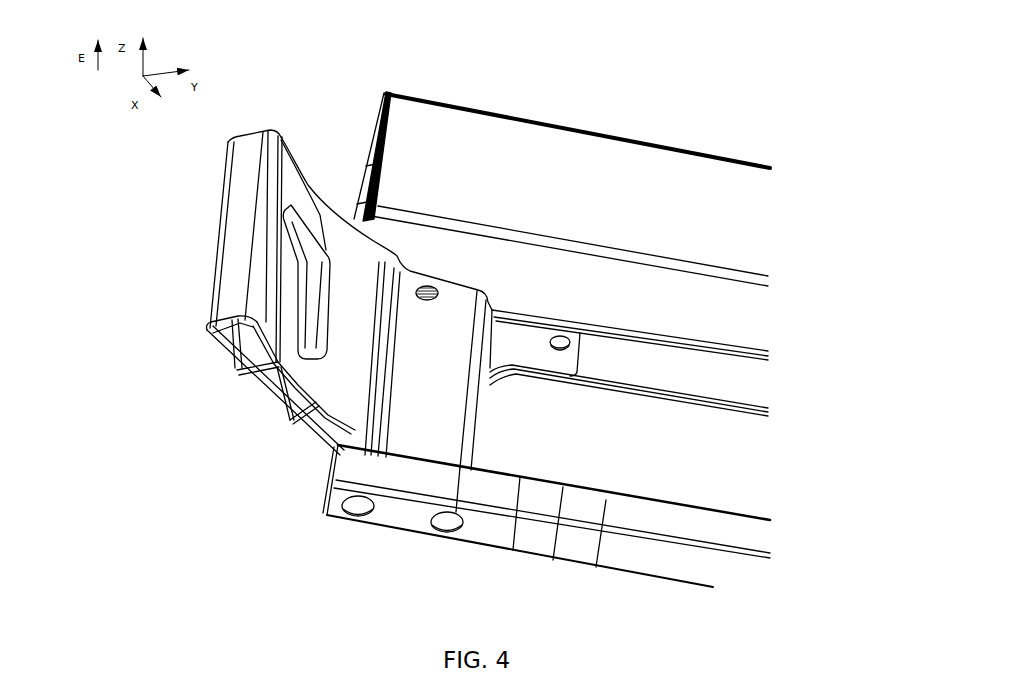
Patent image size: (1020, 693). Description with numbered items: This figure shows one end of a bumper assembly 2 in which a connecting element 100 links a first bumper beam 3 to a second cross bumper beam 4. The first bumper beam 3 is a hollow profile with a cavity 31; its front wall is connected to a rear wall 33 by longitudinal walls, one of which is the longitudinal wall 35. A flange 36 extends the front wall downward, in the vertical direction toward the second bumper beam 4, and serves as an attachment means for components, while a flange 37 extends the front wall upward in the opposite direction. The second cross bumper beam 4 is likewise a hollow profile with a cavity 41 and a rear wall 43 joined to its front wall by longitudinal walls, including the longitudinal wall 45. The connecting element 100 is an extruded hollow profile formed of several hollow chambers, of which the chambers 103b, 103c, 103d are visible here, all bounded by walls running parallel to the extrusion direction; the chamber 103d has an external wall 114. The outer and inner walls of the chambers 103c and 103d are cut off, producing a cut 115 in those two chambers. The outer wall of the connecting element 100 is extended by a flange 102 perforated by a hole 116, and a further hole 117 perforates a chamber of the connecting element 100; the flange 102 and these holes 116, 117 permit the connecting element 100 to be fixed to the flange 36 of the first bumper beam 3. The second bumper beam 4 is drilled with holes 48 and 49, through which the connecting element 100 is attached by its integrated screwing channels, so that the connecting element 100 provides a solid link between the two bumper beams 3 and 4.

The vehicle body structure 2 is at (772, 113).
The first bumper beam 3 is at (756, 208).
The second cross bumper beam 4 is at (752, 535).
The cavity 31 is at (368, 182).
The rear wall 33 is at (562, 165).
The longitudinal wall 35 is at (745, 312).
The flange 36 is at (743, 389).
The flange 37 is at (367, 138).
The cavity 41 is at (326, 486).
The rear wall 43 is at (640, 522).
The longitudinal wall 45 is at (610, 562).
The hole 48 is at (447, 530).
The hole 49 is at (350, 510).
The connecting element 100 is at (210, 175).
The flange 102 is at (527, 345).
The hollow chamber 103b is at (327, 418).
The hollow chamber 103c is at (265, 391).
The hollow chamber 103d is at (304, 413).
The external wall 114 is at (237, 256).
The cut 115 is at (294, 289).
The hole 116 is at (570, 355).
The hole 117 is at (427, 307).